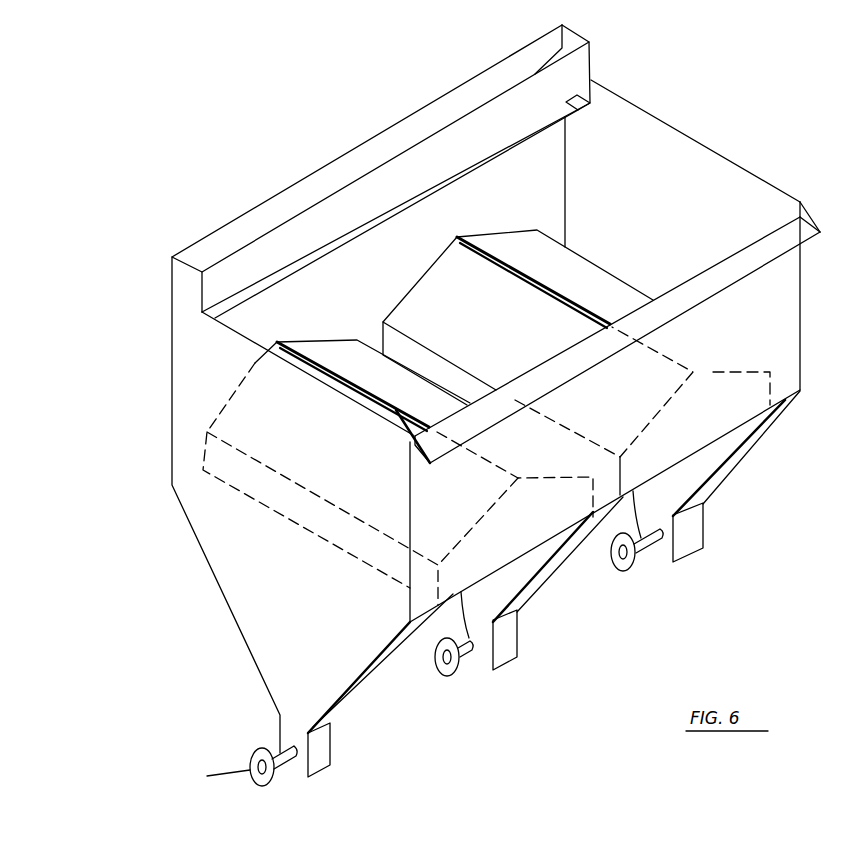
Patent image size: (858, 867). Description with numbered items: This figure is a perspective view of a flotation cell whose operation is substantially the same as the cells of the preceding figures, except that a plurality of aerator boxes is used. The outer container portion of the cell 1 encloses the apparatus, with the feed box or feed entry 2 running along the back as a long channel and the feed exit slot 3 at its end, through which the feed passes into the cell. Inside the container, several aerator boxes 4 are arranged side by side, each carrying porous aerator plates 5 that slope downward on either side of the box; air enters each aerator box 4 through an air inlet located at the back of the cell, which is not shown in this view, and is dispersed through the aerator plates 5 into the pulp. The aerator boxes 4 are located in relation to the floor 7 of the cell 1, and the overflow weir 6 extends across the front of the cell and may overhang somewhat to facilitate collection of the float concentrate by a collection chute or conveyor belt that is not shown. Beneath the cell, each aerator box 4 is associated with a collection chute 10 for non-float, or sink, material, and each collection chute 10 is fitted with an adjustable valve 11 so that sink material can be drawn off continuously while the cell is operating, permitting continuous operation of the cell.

The outer container portion of the cell 1 is at (172, 390).
The feed box 2 is at (295, 203).
The feed exit slot 3 is at (578, 110).
The aerator box 4 is at (717, 417).
The porous aerator plate 5 is at (450, 278).
The overflow weir 6 is at (797, 230).
The floor 7 is at (450, 597).
The collection chute 10 is at (215, 582).
The adjustable valve 11 is at (442, 673).